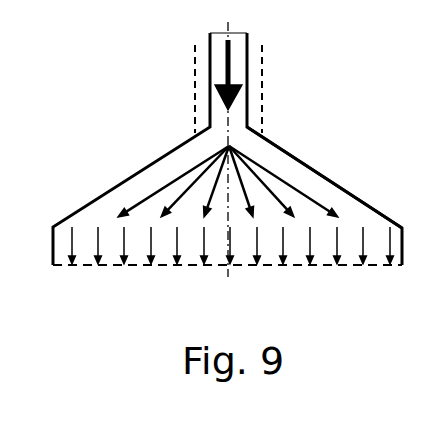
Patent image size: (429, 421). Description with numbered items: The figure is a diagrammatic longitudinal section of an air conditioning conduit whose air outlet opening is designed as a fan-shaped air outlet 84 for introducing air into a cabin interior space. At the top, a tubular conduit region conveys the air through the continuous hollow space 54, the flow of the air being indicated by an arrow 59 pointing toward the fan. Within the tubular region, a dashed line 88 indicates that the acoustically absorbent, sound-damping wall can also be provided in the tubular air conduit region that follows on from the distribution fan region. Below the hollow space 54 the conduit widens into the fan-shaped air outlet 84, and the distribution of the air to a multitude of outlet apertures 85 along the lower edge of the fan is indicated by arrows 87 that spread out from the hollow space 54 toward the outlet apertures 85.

The continuous hollow space 54 is at (241, 141).
The arrow 59 is at (225, 65).
The fan-shaped air outlet 84 is at (104, 137).
The outlet apertures 85 is at (110, 280).
The arrows 87 is at (300, 188).
The dashed line 88 is at (263, 90).